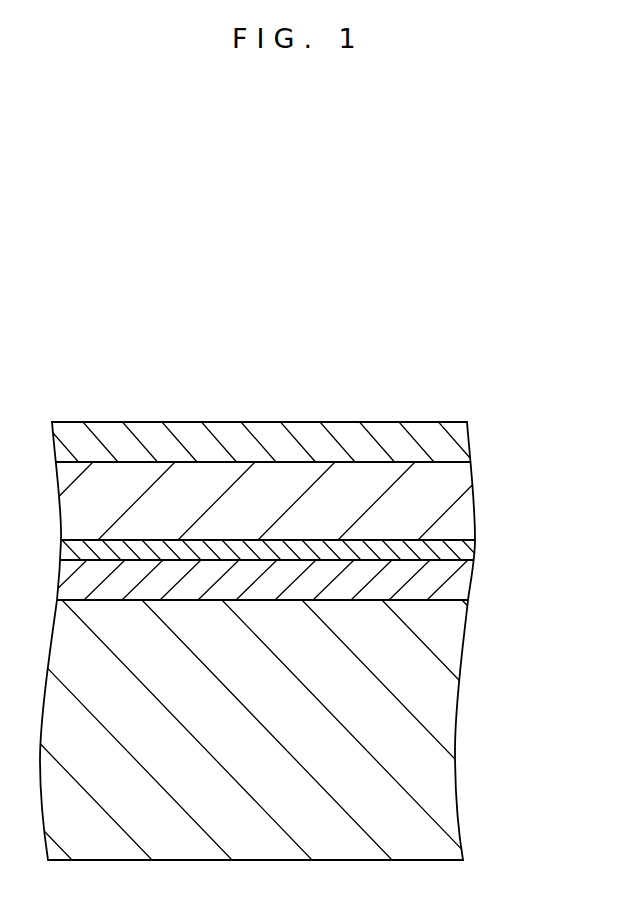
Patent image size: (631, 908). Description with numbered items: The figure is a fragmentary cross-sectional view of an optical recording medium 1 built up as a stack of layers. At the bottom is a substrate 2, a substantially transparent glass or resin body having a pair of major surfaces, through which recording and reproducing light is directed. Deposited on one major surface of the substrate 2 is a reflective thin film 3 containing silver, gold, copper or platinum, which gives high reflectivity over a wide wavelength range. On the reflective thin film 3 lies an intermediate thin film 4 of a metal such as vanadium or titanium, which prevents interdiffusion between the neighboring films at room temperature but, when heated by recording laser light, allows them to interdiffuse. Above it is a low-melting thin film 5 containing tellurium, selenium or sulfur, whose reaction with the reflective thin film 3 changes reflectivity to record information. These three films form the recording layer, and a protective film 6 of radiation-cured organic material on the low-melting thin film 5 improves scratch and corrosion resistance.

The optical recording medium 1 is at (393, 407).
The substrate 2 is at (438, 690).
The reflective thin film 3 is at (455, 590).
The intermediate thin film 4 is at (455, 550).
The low-melting thin film 5 is at (453, 518).
The protective film 6 is at (445, 446).